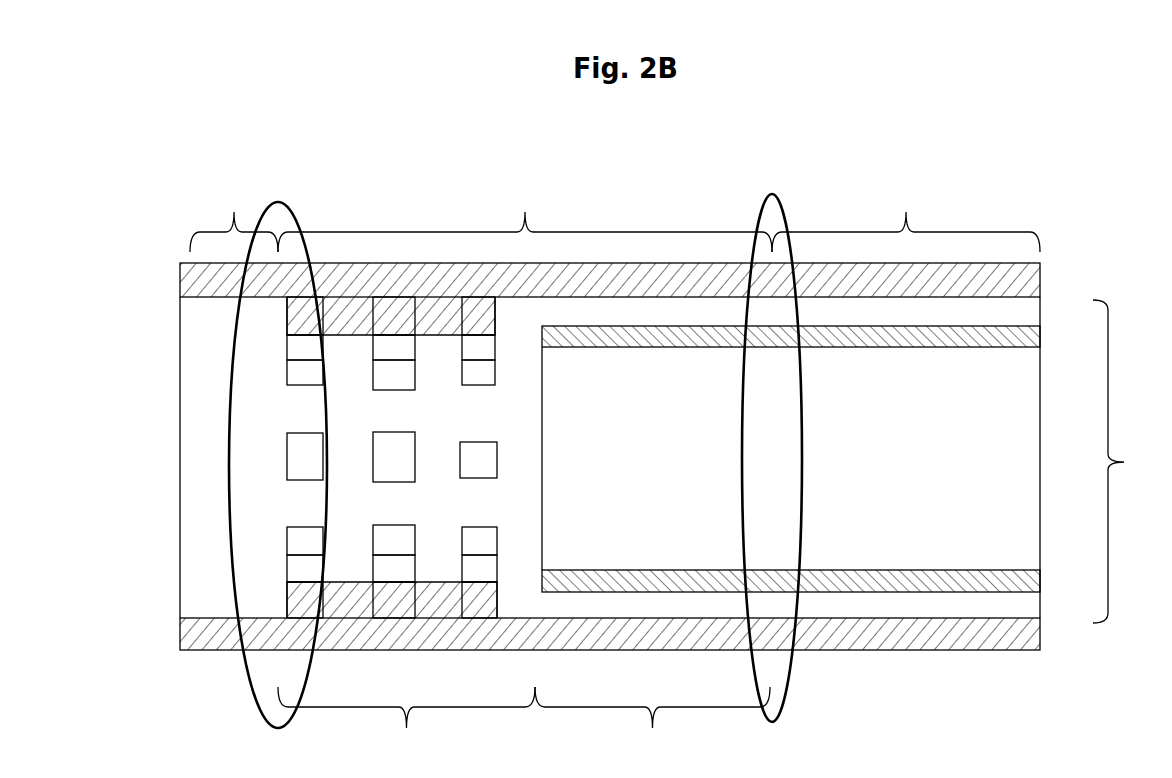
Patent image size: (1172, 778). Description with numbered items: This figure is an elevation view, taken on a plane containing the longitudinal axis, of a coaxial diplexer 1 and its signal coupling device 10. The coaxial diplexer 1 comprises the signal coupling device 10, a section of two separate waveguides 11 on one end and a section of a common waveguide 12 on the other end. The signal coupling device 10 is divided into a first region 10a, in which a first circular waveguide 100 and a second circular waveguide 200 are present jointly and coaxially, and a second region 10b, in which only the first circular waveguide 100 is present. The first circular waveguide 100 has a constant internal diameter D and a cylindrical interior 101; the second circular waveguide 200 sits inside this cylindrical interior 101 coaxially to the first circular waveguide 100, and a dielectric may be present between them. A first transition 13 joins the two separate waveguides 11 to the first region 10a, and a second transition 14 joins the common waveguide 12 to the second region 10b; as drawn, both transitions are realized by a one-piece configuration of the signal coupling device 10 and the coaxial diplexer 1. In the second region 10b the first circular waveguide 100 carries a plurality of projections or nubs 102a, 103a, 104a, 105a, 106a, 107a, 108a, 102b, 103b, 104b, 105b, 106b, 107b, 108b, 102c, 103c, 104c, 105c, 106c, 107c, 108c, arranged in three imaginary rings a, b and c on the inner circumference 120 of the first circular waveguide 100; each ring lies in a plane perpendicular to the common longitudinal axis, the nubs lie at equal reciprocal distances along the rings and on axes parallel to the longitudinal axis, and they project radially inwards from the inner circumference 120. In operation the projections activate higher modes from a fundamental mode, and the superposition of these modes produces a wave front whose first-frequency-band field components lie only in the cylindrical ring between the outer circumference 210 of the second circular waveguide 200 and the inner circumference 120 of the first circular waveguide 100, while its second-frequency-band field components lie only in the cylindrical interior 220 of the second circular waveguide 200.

The coaxial diplexer 1 is at (665, 444).
The signal coupling device 10 is at (525, 214).
The first region 10a is at (652, 723).
The second region 10b is at (406, 723).
The two separate waveguides 11 is at (906, 214).
The common waveguide 12 is at (234, 214).
The first transition 13 is at (772, 441).
The second transition 14 is at (278, 444).
The first circular waveguide 100 is at (633, 456).
The cylindrical interior 101 is at (508, 590).
The projection 102a is at (280, 316).
The projection 102b is at (371, 316).
The projection 102c is at (456, 316).
The projection 103a is at (280, 345).
The projection 103b is at (371, 345).
The projection 103c is at (456, 345).
The projection 104a is at (280, 371).
The projection 104b is at (371, 373).
The projection 104c is at (456, 371).
The projection 105a is at (280, 456).
The projection 105b is at (371, 457).
The projection 105c is at (457, 459).
The projection 106a is at (280, 541).
The projection 106b is at (371, 540).
The projection 106c is at (457, 541).
The projection 107a is at (280, 567).
The projection 107b is at (371, 567).
The projection 107c is at (457, 567).
The projection 108a is at (280, 599).
The projection 108b is at (371, 599).
The projection 108c is at (457, 599).
The inner circumference 120 is at (515, 297).
The second circular waveguide 200 is at (814, 458).
The outer circumference 210 is at (606, 347).
The cylindrical interior 220 is at (673, 434).
The internal diameter D is at (1122, 461).